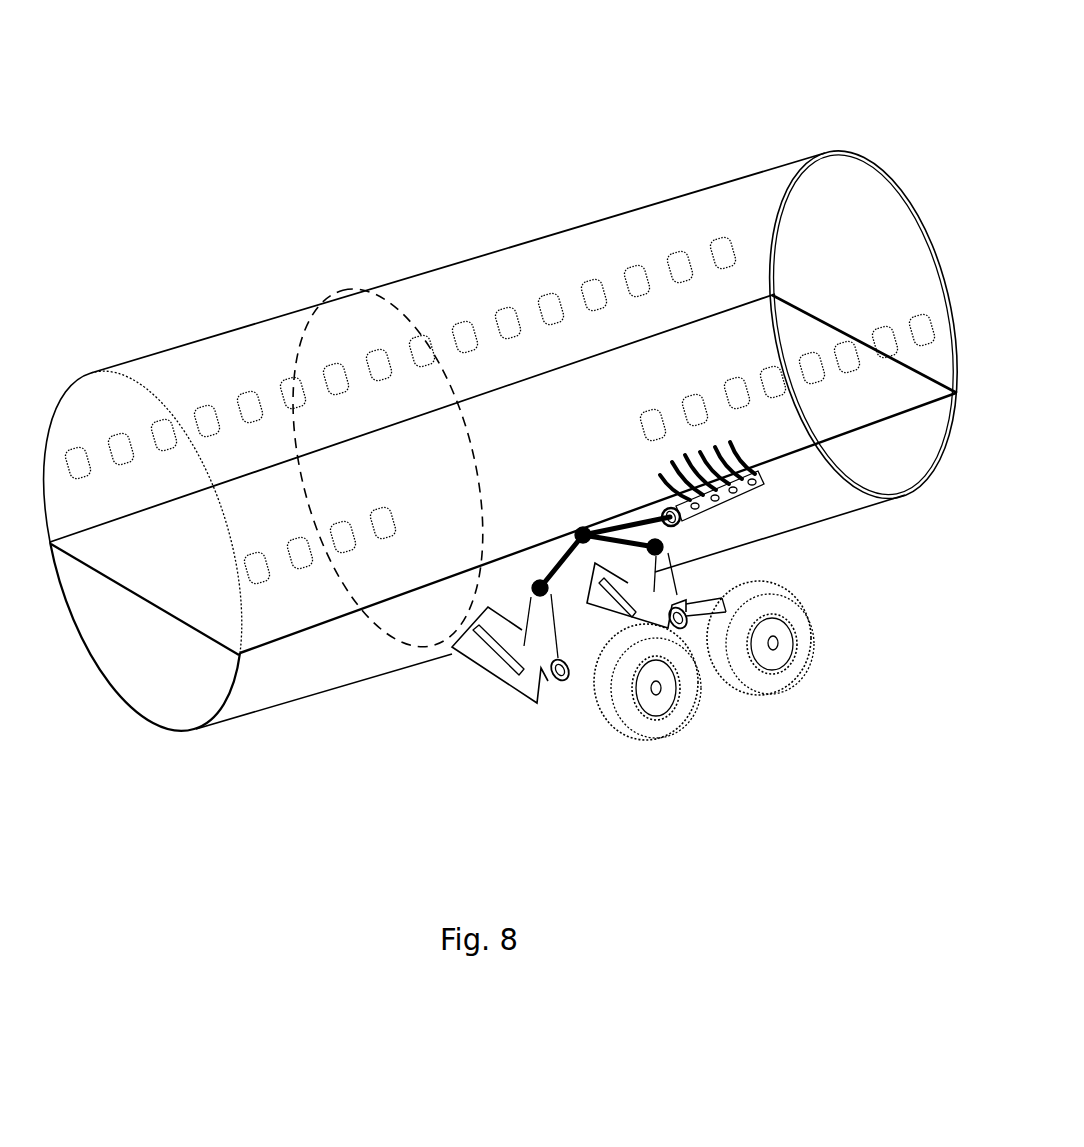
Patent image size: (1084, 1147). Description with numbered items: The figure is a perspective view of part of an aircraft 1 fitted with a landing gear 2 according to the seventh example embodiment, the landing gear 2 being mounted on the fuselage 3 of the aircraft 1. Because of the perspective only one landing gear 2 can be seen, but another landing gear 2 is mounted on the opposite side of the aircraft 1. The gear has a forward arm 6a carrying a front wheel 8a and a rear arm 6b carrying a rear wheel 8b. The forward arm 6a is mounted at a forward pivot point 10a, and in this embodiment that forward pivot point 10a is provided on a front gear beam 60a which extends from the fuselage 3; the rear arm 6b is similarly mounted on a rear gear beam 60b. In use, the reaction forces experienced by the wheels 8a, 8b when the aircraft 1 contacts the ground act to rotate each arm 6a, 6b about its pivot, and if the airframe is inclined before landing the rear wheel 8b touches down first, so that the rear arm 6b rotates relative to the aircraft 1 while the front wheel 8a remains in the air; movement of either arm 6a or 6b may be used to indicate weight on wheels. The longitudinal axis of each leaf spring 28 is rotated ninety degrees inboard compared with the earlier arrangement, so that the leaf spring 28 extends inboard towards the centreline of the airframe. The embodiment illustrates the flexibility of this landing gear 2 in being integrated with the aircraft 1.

The aircraft 1 is at (124, 319).
The landing gear 2 is at (479, 709).
The fuselage 3 is at (252, 677).
The forward arm 6a is at (582, 667).
The rear arm 6b is at (703, 620).
The front wheel 8a is at (658, 720).
The rear wheel 8b is at (790, 668).
The forward pivot point 10a is at (545, 700).
The leaf spring 28 is at (667, 470).
The front gear beam 60a is at (492, 652).
The rear gear beam 60b is at (677, 575).